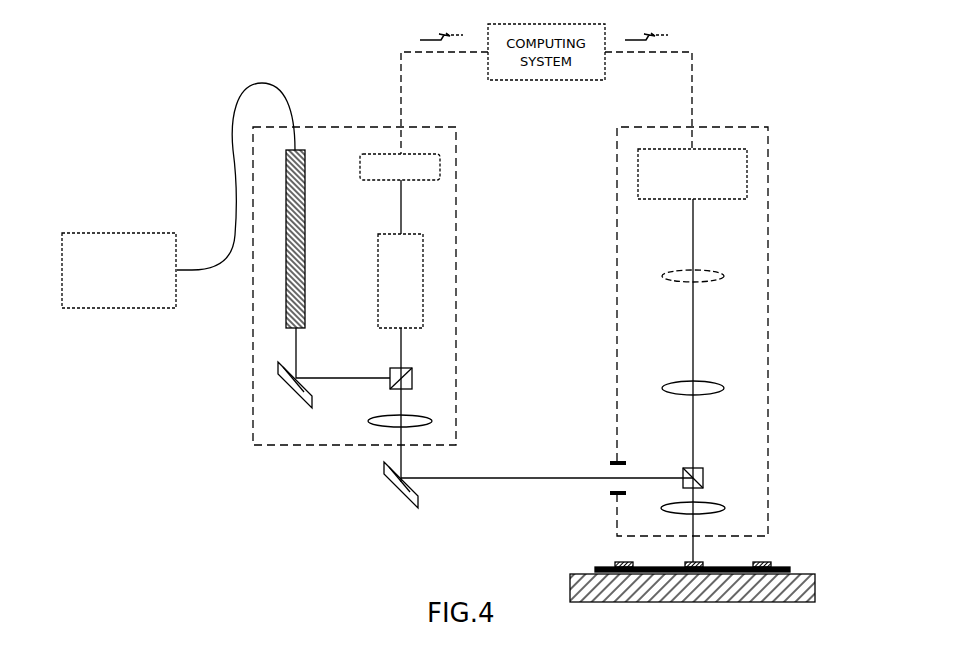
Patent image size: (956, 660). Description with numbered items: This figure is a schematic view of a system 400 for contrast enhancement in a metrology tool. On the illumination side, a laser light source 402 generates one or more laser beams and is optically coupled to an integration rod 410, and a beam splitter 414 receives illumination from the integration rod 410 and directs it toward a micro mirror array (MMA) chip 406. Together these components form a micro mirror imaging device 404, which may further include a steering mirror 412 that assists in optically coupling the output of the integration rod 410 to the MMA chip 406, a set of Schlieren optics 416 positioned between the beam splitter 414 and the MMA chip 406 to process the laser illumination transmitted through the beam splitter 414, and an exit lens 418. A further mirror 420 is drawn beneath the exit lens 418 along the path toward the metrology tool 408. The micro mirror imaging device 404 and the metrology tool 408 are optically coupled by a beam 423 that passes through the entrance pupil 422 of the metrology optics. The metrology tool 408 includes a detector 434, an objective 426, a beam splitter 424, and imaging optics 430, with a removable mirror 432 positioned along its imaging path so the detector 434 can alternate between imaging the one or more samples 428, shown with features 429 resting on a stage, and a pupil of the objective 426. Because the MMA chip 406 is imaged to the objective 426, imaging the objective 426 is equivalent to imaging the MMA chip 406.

The system 400 is at (130, 93).
The laser light source 402 is at (118, 233).
The micro mirror imaging device 404 is at (460, 142).
The micro mirror array (MMA) chip 406 is at (360, 171).
The metrology tool 408 is at (770, 141).
The integration rod 410 is at (305, 238).
The steering mirror 412 is at (295, 388).
The beam splitter 414 is at (410, 369).
The Schlieren optics 416 is at (378, 284).
The exit lens 418 is at (385, 415).
The mirror 420 is at (400, 487).
The entrance pupil 422 is at (611, 461).
The beam 423 is at (512, 479).
The beam splitter 424 is at (703, 468).
The objective 426 is at (712, 504).
The samples 428 is at (790, 568).
The sample features 429 is at (705, 563).
The imaging optics 430 is at (712, 386).
The removable mirror 432 is at (712, 274).
The detector 434 is at (747, 175).